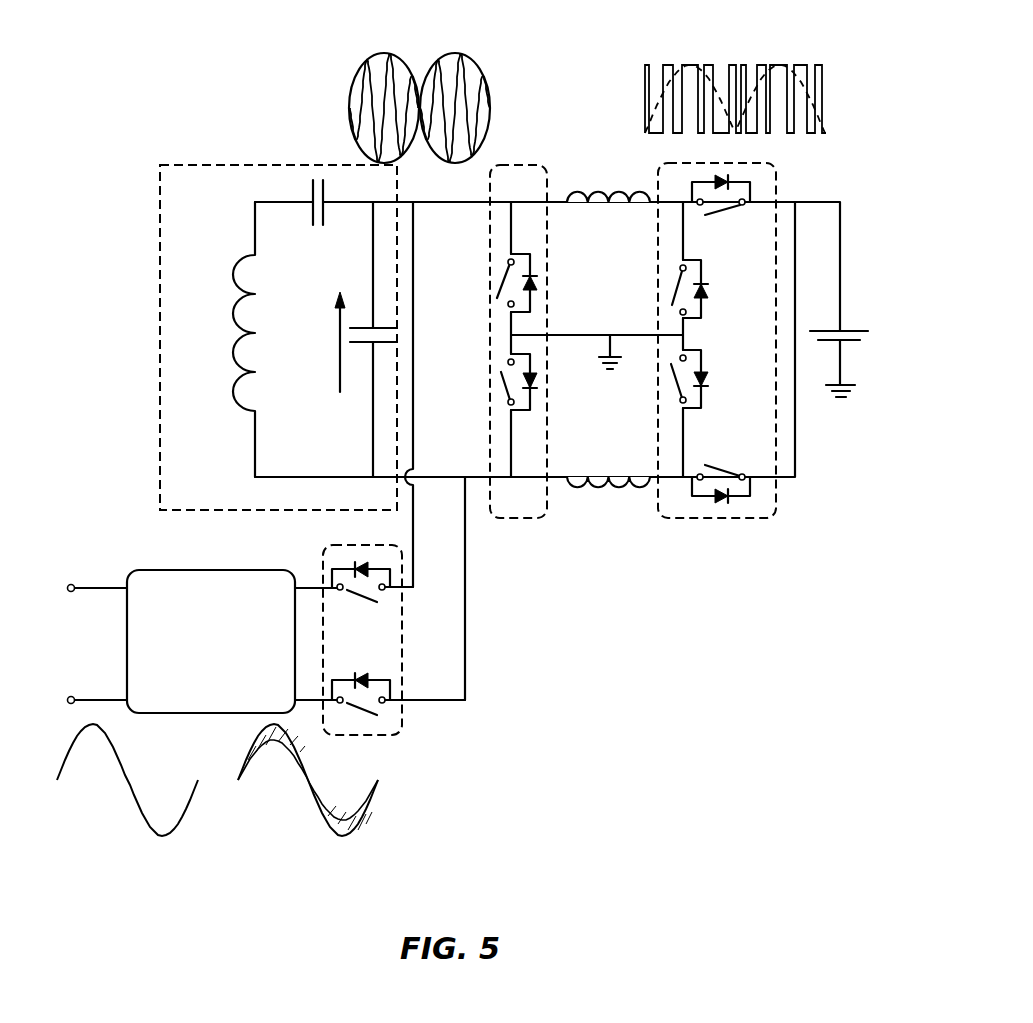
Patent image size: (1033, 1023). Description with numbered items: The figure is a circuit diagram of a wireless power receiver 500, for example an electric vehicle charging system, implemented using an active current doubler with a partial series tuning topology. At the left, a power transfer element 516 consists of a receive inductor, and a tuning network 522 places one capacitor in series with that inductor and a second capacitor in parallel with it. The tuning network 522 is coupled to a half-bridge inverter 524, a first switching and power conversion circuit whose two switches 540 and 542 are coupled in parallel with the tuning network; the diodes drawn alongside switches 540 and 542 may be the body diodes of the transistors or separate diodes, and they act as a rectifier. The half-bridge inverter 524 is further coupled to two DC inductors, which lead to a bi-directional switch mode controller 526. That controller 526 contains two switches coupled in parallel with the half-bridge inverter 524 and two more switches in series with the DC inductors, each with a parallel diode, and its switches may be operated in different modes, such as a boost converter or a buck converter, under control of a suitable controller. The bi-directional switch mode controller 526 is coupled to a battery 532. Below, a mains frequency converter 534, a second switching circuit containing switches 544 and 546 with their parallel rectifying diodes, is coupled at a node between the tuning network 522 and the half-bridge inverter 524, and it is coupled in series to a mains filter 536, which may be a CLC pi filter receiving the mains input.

The wireless power receiver 500 is at (222, 90).
The power transfer element 516 is at (240, 262).
The tuning network 522 is at (185, 160).
The half-bridge inverter 524 is at (530, 518).
The bi-directional switch mode controller 526 is at (715, 518).
The battery 532 is at (852, 343).
The mains frequency converter 534 is at (402, 725).
The mains filter 536 is at (207, 570).
The switch 540 is at (492, 289).
The switch 542 is at (499, 369).
The switch 544 is at (358, 598).
The switch 546 is at (358, 710).